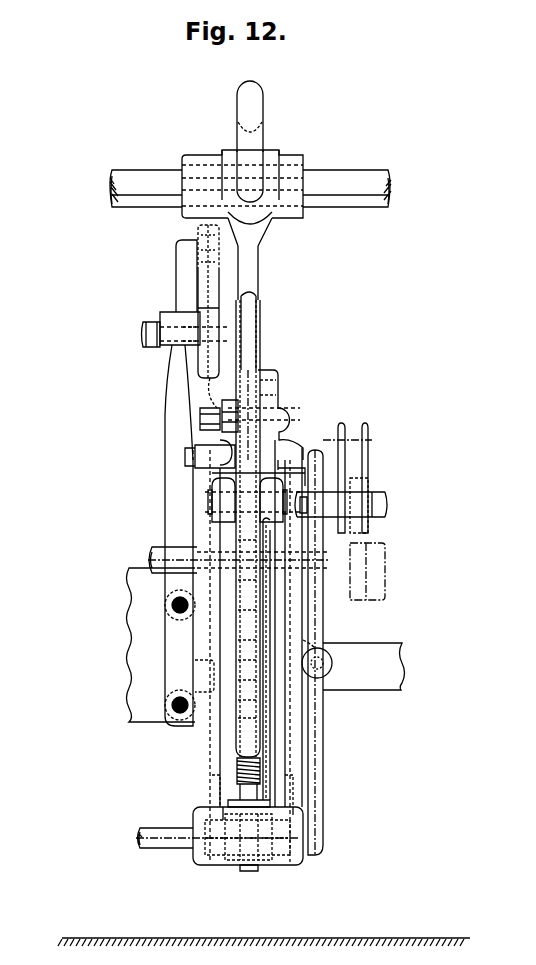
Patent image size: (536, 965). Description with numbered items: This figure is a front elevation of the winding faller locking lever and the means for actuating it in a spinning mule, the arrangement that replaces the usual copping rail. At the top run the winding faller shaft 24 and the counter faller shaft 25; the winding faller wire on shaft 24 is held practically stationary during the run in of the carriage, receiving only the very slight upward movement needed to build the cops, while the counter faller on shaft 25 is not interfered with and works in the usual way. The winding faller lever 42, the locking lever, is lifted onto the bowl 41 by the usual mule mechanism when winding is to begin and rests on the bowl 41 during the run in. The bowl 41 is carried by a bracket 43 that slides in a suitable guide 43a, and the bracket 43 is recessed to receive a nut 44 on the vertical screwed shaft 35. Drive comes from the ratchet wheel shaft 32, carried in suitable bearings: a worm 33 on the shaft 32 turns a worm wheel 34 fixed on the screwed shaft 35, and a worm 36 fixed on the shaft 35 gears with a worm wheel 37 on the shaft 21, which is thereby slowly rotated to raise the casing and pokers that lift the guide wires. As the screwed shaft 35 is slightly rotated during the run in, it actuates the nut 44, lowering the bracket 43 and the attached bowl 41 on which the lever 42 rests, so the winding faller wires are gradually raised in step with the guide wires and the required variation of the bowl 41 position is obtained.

The shaft 21 is at (158, 548).
The winding faller shaft 24 is at (400, 200).
The counter faller shaft 25 is at (136, 193).
The shaft 32 is at (150, 840).
The worm 33 is at (280, 861).
The worm wheel 34 is at (218, 860).
The screwed shaft 35 is at (256, 771).
The worm 36 is at (280, 581).
The worm wheel 37 is at (232, 603).
The bowl 41 is at (205, 492).
The winding faller lever 42 is at (233, 377).
The bracket 43 is at (271, 718).
The guide 43a is at (298, 749).
The nut 44 is at (248, 707).